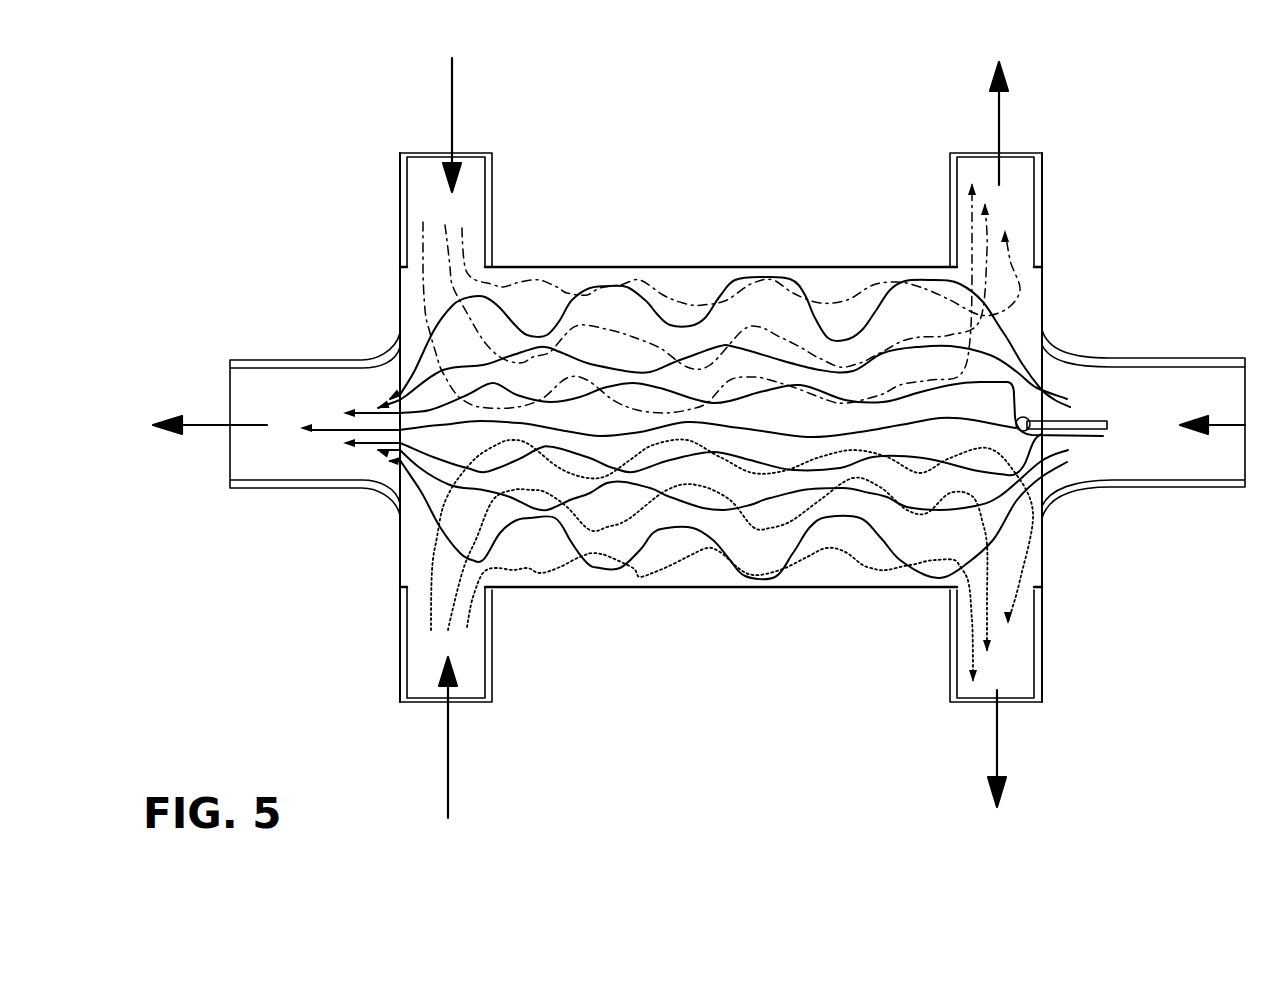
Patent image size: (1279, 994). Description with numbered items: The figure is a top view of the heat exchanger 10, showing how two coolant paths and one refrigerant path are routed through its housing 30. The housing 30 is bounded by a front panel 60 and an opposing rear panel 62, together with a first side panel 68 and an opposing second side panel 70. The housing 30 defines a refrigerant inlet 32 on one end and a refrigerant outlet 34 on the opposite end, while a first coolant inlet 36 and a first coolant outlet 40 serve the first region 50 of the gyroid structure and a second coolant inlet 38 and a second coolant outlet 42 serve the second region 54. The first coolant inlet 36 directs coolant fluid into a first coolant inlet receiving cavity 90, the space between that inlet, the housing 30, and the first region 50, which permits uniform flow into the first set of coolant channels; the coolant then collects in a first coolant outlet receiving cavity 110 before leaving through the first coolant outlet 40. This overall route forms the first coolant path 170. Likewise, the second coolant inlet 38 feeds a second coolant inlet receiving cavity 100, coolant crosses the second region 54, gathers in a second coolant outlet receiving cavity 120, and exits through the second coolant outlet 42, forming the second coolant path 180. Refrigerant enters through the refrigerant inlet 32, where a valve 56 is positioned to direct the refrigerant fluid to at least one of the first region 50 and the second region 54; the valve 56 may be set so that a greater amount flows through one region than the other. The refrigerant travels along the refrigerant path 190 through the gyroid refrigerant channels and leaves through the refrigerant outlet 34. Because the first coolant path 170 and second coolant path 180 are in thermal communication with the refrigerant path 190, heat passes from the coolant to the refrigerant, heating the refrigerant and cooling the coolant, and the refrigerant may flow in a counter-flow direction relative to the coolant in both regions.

The heat exchanger 10 is at (604, 123).
The housing 30 is at (1043, 272).
The refrigerant inlet 32 is at (1186, 367).
The refrigerant outlet 34 is at (272, 378).
The first coolant inlet 36 is at (415, 187).
The second coolant inlet 38 is at (420, 663).
The first coolant outlet 40 is at (1018, 212).
The second coolant outlet 42 is at (1022, 665).
The first region 50 is at (758, 303).
The second region 54 is at (765, 550).
The valve 56 is at (1093, 415).
The front panel 60 is at (1043, 530).
The rear panel 62 is at (400, 538).
The first side panel 68 is at (593, 267).
The second side panel 70 is at (598, 590).
The first coolant inlet receiving cavity 90 is at (443, 296).
The second coolant inlet receiving cavity 100 is at (443, 563).
The first coolant outlet receiving cavity 110 is at (1005, 320).
The second coolant outlet receiving cavity 120 is at (998, 558).
The first coolant path 170 is at (500, 252).
The second coolant path 180 is at (463, 577).
The refrigerant path 190 is at (983, 427).